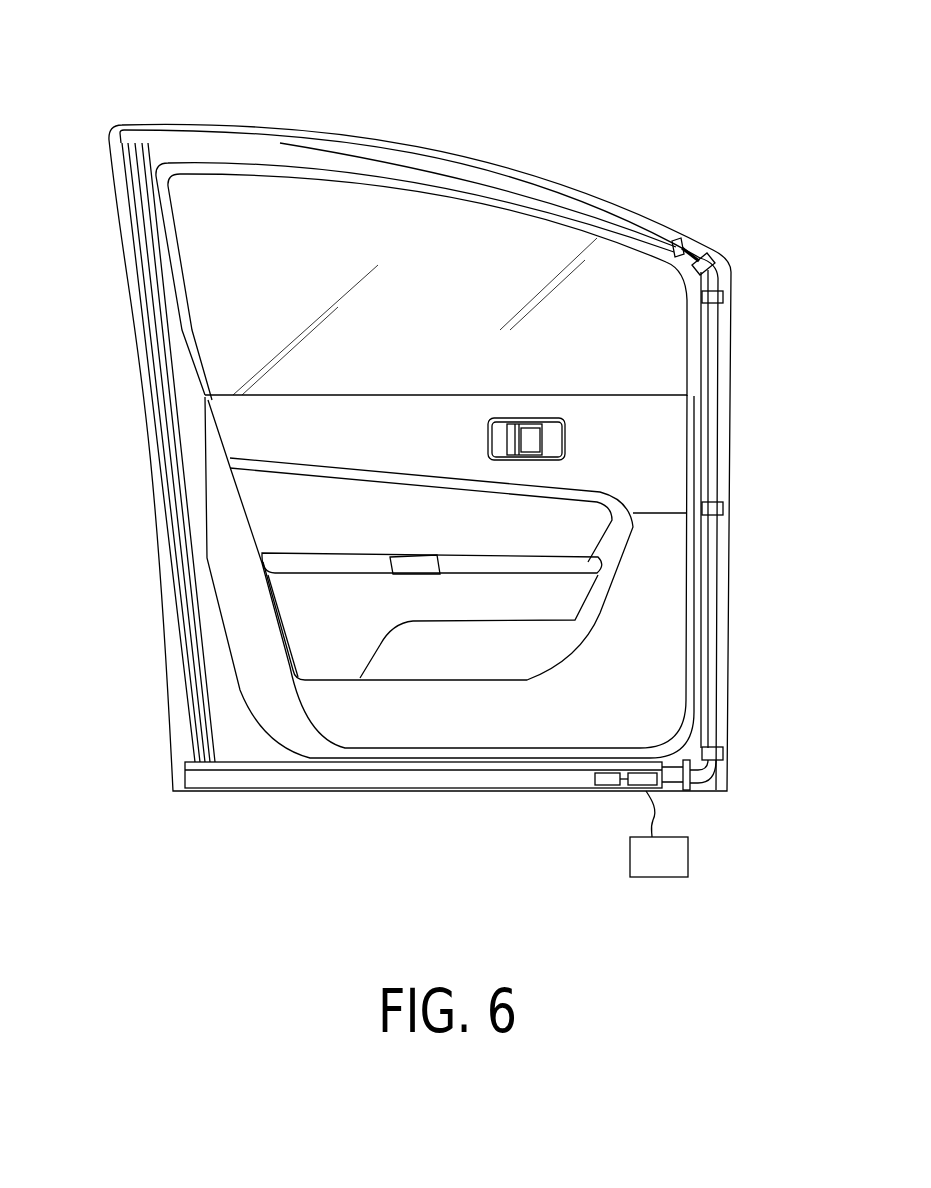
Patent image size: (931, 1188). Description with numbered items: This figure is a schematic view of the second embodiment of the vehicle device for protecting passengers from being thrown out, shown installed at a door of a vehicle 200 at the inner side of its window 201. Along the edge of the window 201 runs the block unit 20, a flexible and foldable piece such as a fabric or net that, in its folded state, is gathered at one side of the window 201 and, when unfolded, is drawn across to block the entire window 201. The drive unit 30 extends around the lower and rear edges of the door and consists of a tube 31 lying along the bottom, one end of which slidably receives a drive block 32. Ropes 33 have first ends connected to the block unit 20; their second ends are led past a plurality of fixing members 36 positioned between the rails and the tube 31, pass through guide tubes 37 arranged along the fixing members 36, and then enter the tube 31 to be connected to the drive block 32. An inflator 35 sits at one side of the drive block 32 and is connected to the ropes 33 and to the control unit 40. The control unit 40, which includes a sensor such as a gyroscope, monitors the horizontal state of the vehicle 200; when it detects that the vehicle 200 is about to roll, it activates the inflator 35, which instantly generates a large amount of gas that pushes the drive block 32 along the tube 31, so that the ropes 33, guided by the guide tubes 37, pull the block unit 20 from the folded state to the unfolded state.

The vehicle 200 is at (182, 105).
The window 201 is at (297, 202).
The block unit 20 is at (121, 302).
The drive unit 30 is at (736, 594).
The tube 31 is at (396, 787).
The drive block 32 is at (600, 788).
The ropes 33 is at (672, 786).
The inflator 35 is at (635, 790).
The fixing members 36 is at (690, 790).
The guide tubes 37 is at (705, 780).
The control unit 40 is at (665, 890).